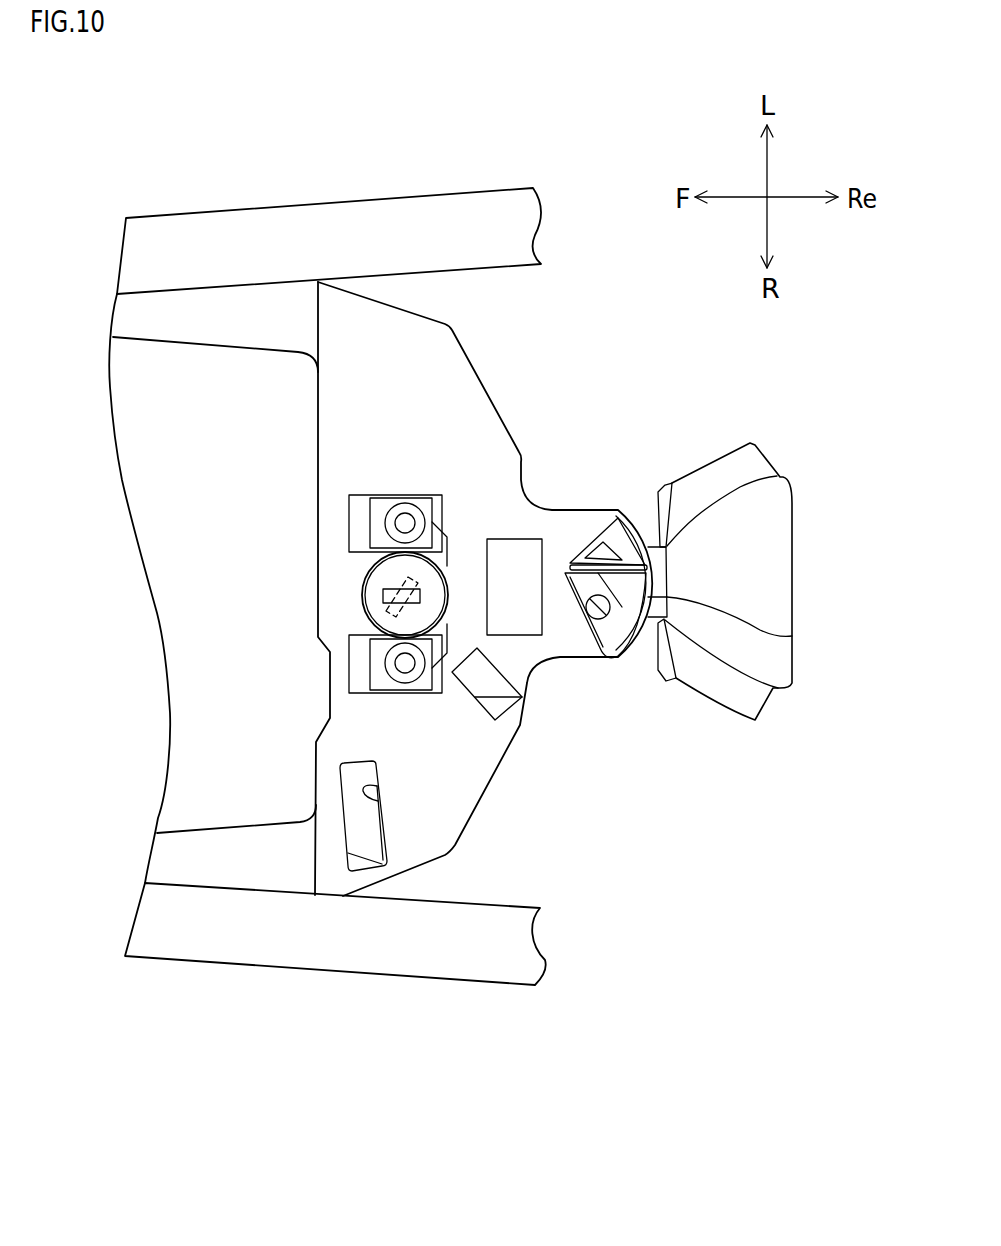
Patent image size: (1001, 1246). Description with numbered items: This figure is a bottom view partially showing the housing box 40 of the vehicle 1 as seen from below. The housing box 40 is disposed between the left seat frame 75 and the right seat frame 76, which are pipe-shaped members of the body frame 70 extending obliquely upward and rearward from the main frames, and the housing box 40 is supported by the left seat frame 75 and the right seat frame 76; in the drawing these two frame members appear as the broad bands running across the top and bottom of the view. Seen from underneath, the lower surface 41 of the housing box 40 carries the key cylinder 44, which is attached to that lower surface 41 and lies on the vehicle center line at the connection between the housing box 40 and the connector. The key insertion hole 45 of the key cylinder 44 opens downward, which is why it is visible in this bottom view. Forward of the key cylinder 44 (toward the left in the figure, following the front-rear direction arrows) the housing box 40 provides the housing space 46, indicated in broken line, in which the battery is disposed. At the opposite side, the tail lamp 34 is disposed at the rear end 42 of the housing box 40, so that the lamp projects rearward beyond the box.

The vehicle 1 is at (603, 346).
The tail lamp 34 is at (793, 665).
The housing box 40 is at (507, 414).
The lower surface 41 is at (468, 783).
The rear end 42 is at (792, 636).
The key cylinder 44 is at (448, 612).
The key insertion hole 45 is at (422, 596).
The housing space 46 is at (192, 685).
The body frame 70 is at (331, 587).
The left seat frame 75 is at (276, 223).
The right seat frame 76 is at (397, 958).